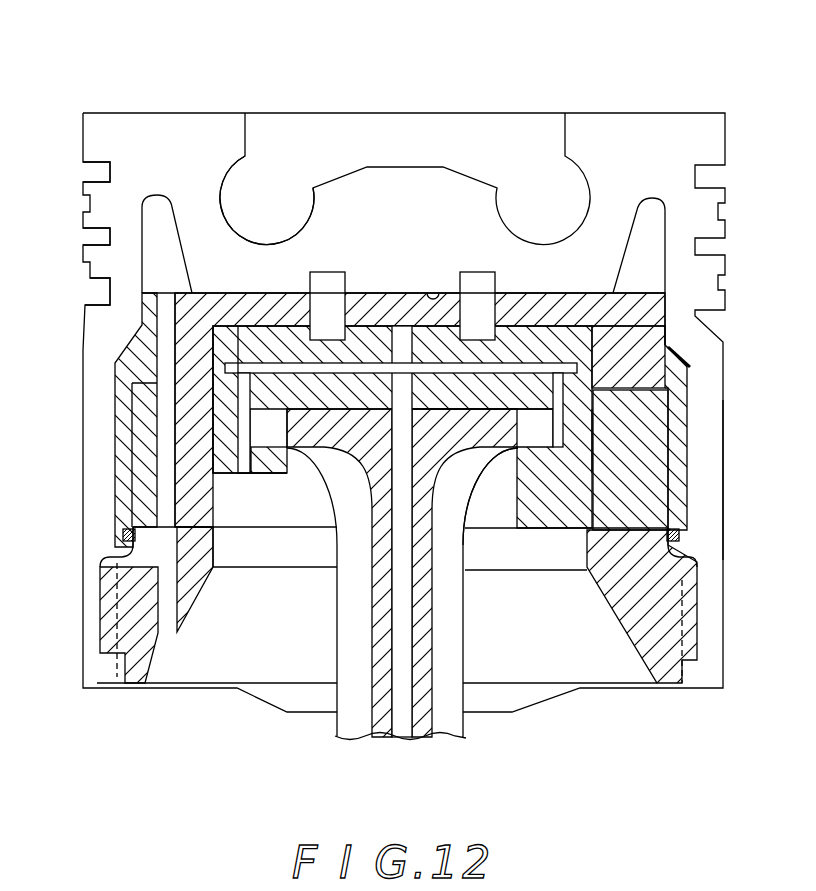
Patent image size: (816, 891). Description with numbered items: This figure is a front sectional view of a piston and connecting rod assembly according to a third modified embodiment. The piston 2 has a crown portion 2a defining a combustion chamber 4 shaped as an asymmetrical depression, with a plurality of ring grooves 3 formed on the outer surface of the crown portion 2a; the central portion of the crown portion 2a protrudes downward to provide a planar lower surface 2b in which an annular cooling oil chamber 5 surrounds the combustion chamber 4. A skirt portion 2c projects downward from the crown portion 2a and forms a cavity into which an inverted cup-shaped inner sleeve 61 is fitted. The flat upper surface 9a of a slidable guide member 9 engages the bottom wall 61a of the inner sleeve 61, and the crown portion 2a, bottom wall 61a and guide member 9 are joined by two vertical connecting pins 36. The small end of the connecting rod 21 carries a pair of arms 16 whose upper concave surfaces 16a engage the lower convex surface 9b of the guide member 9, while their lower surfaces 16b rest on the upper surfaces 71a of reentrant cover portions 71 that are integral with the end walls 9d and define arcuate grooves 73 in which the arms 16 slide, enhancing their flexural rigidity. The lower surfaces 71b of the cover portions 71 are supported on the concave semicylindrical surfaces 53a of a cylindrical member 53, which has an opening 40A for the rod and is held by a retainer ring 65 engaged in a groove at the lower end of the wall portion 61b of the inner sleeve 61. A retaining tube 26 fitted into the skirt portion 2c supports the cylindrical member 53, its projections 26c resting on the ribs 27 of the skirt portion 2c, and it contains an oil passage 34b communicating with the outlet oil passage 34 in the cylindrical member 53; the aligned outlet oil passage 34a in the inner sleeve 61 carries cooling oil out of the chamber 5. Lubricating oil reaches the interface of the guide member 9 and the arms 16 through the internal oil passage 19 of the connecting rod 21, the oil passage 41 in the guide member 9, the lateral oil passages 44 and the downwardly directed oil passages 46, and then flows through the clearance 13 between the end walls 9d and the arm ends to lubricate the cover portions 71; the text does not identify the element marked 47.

The piston 2 is at (188, 106).
The crown portion 2a is at (393, 211).
The lower surface 2b is at (432, 290).
The skirt portion 2c is at (705, 476).
The ring grooves 3 is at (103, 291).
The combustion chamber 4 is at (224, 197).
The cooling oil chamber 5 is at (160, 241).
The guide member 9 is at (560, 356).
The upper surface 9a is at (518, 320).
The lower convex surface 9b is at (443, 410).
The end wall 9d is at (603, 398).
The clearance 13 is at (238, 416).
The arms 16 is at (280, 448).
The upper concave surfaces 16a is at (344, 402).
The lower convex surfaces 16b is at (594, 457).
The internal oil passage 19 is at (397, 632).
The connecting rod 21 is at (357, 720).
The retaining tube 26 is at (618, 602).
The projections 26c is at (690, 598).
The ribs 27 is at (678, 668).
The outlet oil passage 34 is at (163, 472).
The outlet oil passage 34a is at (172, 292).
The oil passage 34b is at (167, 627).
The connecting pins 36 is at (480, 290).
The opening 40A is at (565, 580).
The oil passage 41 is at (390, 343).
The oil passages 44 is at (281, 360).
The oil passages 46 is at (250, 388).
The leg end 47 is at (248, 474).
The cylindrical member 53 is at (145, 418).
The concave semicylindrical surfaces 53a is at (562, 468).
The inner sleeve 61 is at (387, 284).
The bottom wall 61a is at (577, 310).
The wall portion 61b is at (125, 508).
The retainer ring 65 is at (662, 540).
The cover portion 71 is at (512, 533).
The upper surfaces 71a is at (282, 447).
The lower surfaces 71b is at (235, 580).
The arcuate grooves 73 is at (553, 427).